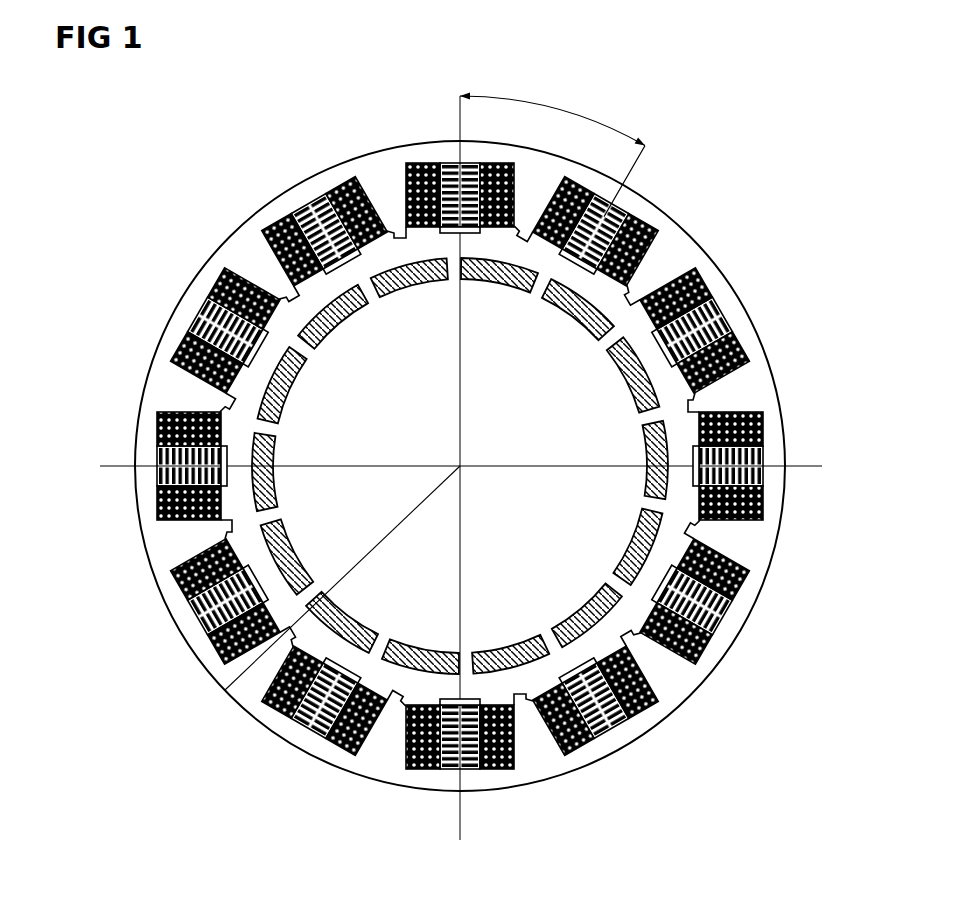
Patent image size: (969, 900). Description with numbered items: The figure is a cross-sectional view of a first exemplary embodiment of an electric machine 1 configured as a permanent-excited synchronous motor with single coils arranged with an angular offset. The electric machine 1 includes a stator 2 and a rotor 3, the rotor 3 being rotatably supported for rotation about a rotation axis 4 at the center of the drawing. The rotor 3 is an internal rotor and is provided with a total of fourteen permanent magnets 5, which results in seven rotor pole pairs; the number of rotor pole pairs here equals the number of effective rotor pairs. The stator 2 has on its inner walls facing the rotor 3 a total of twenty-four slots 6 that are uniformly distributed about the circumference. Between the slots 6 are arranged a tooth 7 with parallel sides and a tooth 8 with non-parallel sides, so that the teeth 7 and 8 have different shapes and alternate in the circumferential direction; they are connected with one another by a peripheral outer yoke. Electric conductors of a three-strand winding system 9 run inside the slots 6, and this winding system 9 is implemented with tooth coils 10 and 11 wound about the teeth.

The electric machine 1 is at (742, 126).
The stator 2 is at (683, 232).
The rotor 3 is at (570, 345).
The rotation axis 4 is at (225, 690).
The permanent magnets 5 is at (258, 397).
The slots 6 is at (752, 352).
The tooth with parallel sides 7 is at (458, 788).
The tooth with non-parallel sides 8 is at (386, 745).
The three-strand winding system 9 is at (217, 234).
The tooth coil 10 is at (432, 162).
The tooth coil 11 is at (298, 212).